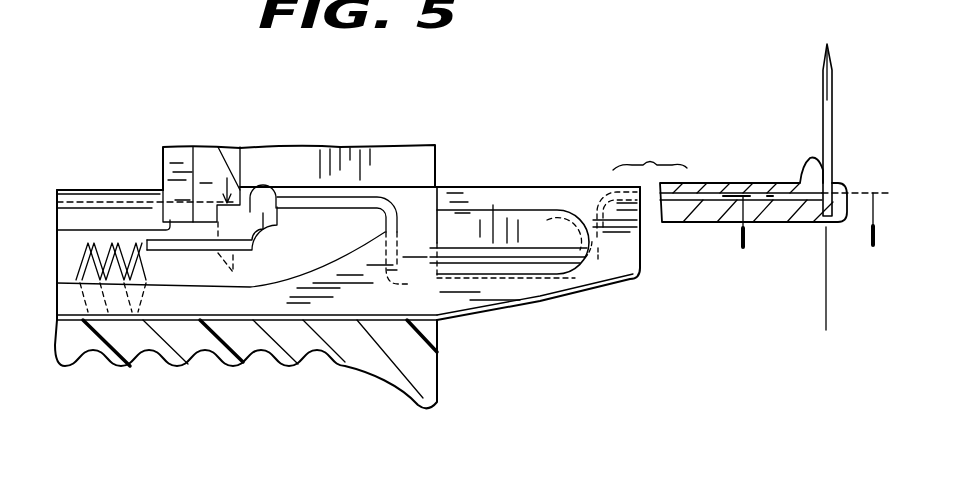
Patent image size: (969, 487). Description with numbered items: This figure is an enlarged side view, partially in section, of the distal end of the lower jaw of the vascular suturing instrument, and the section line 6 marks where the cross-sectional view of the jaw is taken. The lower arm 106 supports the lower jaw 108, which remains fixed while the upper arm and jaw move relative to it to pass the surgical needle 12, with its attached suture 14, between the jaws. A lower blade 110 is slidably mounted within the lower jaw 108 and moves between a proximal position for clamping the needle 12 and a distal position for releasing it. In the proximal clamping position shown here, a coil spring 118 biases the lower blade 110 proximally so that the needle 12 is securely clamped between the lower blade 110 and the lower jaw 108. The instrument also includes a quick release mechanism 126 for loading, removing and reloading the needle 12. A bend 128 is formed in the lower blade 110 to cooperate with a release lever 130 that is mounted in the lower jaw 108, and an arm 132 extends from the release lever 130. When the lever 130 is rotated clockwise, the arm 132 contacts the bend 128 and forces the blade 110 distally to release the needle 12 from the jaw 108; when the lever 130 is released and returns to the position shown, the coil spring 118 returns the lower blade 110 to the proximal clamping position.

The section line 6- 6 is at (816, 235).
The surgical needle 12 is at (823, 98).
The suture 14 is at (826, 303).
The lower arm 106 is at (367, 360).
The lower jaw 108 is at (580, 287).
The lower blade 110 is at (697, 197).
The coil spring 118 is at (134, 300).
The quick release mechanism 126 is at (494, 190).
The bend 128 is at (598, 262).
The release lever 130 is at (520, 225).
The arm 132 is at (566, 190).